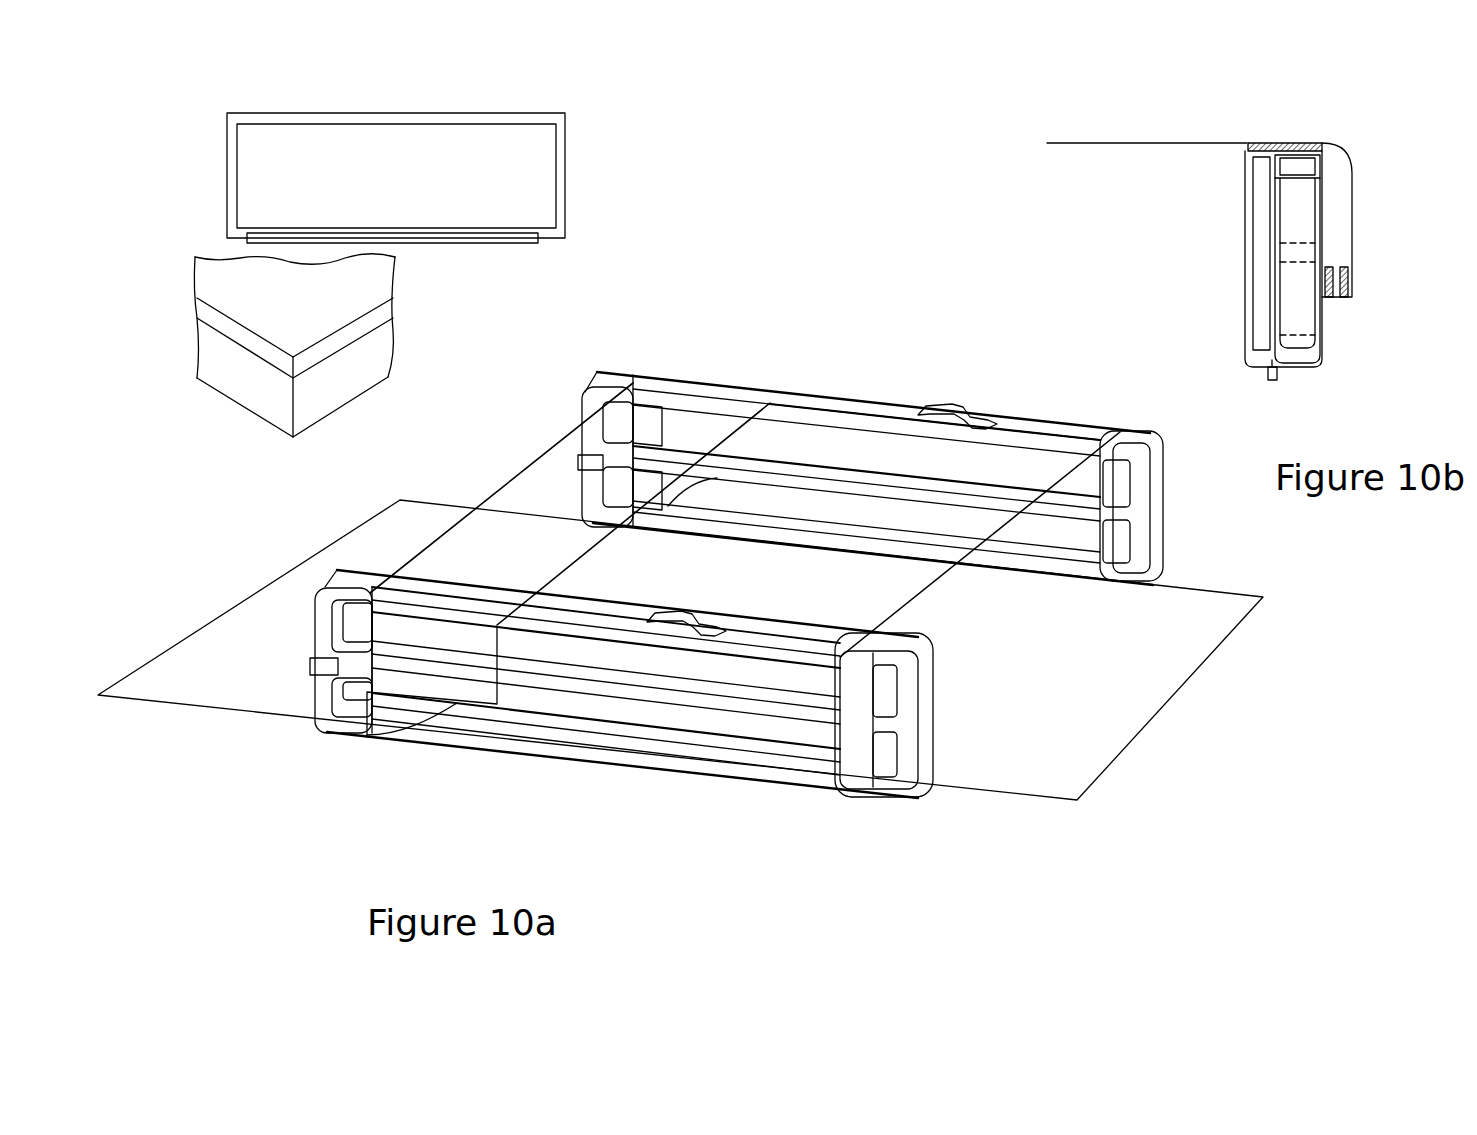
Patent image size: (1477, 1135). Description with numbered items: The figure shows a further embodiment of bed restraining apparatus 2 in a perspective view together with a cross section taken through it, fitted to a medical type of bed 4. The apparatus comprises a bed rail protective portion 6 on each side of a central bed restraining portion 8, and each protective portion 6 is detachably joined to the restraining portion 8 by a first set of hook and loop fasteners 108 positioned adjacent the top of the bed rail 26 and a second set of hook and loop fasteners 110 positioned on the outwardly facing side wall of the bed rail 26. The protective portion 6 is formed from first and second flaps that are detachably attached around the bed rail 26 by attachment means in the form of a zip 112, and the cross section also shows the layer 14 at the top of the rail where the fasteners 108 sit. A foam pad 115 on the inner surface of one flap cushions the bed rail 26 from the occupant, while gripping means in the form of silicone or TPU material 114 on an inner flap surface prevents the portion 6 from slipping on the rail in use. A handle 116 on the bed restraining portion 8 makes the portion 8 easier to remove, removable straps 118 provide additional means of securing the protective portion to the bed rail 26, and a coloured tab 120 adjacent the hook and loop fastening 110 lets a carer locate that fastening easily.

In FIG. 10a, the bed restraining apparatus 2 is at (1058, 406).
In FIG. 10a, the bed 4 is at (1070, 760).
In FIG. 10a, the bed rail protective portion 6 is at (1082, 539).
In FIG. 10b, the bed rail protective portion 6 is at (1326, 250).
In FIG. 10a, the bed restraining portion 8 is at (545, 490).
In FIG. 10b, the bed restraining portion 8 is at (1203, 141).
In FIG. 10b, the adhesive layer 14 is at (1278, 139).
In FIG. 10a, the bed rail 26 is at (1157, 473).
In FIG. 10b, the bed rail 26 is at (1305, 310).
In FIG. 10b, the first set of hook and loop fasteners 108 is at (1315, 143).
In FIG. 10b, the second set of hook and loop fasteners 110 is at (1330, 297).
In FIG. 10b, the zip 112 is at (1278, 373).
In FIG. 10b, the silicone or TPU material 114 is at (1322, 167).
In FIG. 10b, the foam pad 115 is at (1259, 237).
In FIG. 10a, the handle 116 is at (962, 410).
In FIG. 10a, the removable straps 118 is at (323, 670).
In FIG. 10a, the coloured tab 120 is at (385, 712).